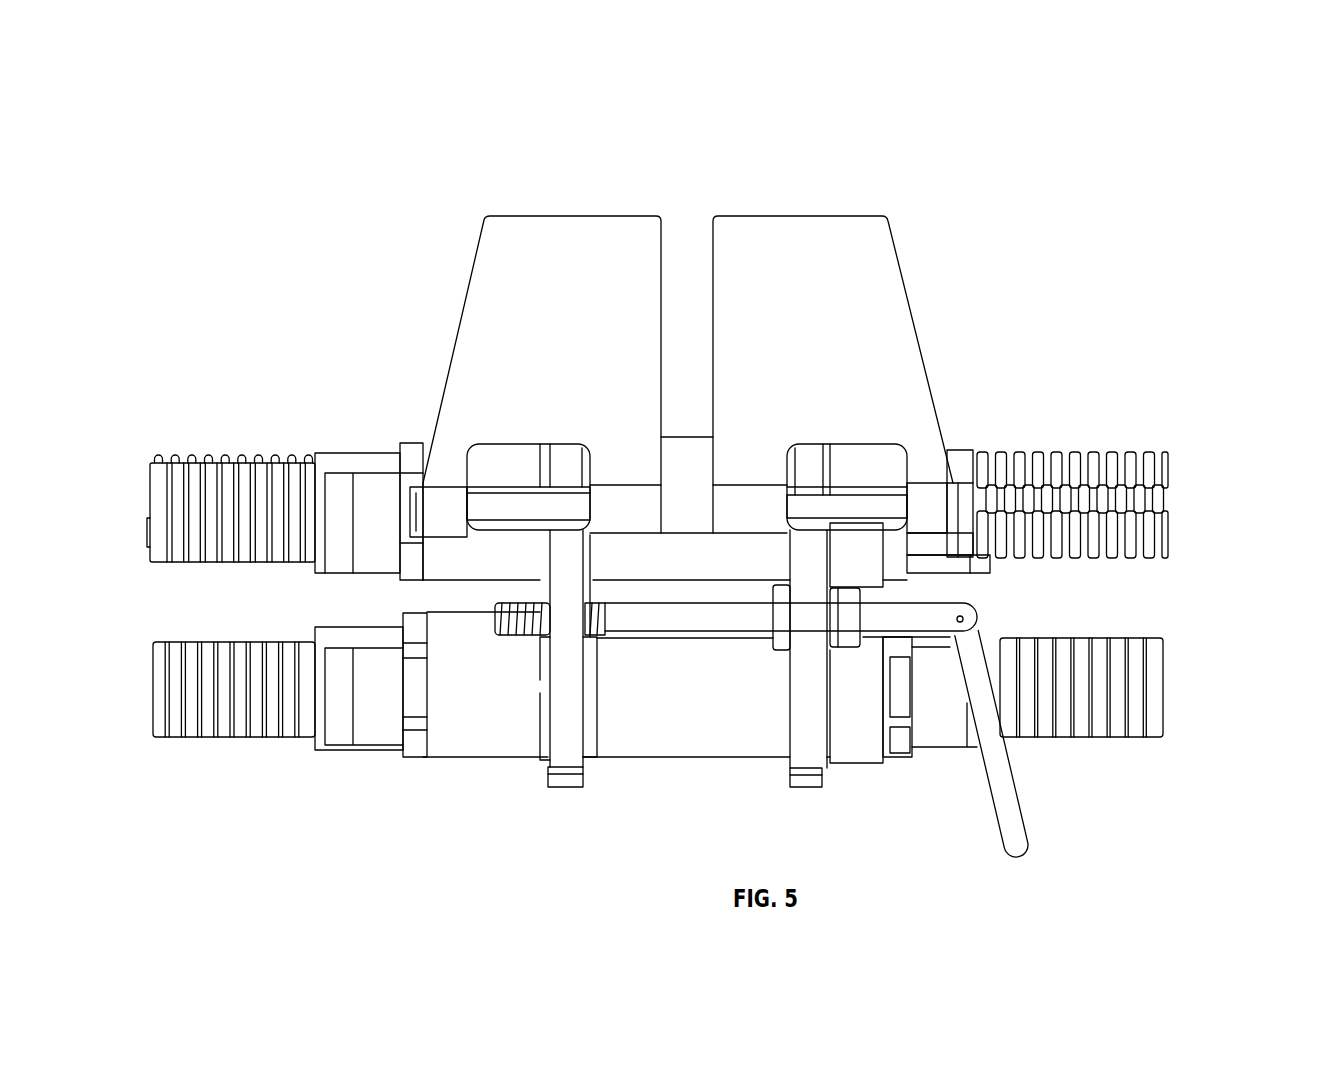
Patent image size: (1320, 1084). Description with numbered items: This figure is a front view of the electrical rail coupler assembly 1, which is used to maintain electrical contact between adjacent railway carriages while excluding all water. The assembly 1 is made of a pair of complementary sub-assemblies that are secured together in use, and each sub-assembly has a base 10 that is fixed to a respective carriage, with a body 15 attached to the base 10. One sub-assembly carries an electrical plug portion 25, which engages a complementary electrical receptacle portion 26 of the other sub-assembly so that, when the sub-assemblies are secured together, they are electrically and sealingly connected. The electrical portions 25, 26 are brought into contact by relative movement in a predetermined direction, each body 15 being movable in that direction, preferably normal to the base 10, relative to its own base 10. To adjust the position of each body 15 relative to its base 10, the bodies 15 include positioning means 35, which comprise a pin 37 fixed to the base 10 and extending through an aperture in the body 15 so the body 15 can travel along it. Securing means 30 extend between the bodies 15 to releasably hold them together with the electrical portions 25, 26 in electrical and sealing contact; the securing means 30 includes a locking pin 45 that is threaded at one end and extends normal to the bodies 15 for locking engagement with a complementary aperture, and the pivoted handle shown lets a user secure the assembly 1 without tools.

The electrical rail coupler assembly 1 is at (887, 132).
The base 10 is at (883, 293).
The body 15 is at (572, 788).
The electrical plug portion 25 is at (1168, 533).
The electrical receptacle portion 26 is at (240, 725).
The securing means 30 is at (993, 622).
The positioning means 35 is at (445, 517).
The pin 37 is at (523, 497).
The locking pin 45 is at (635, 620).